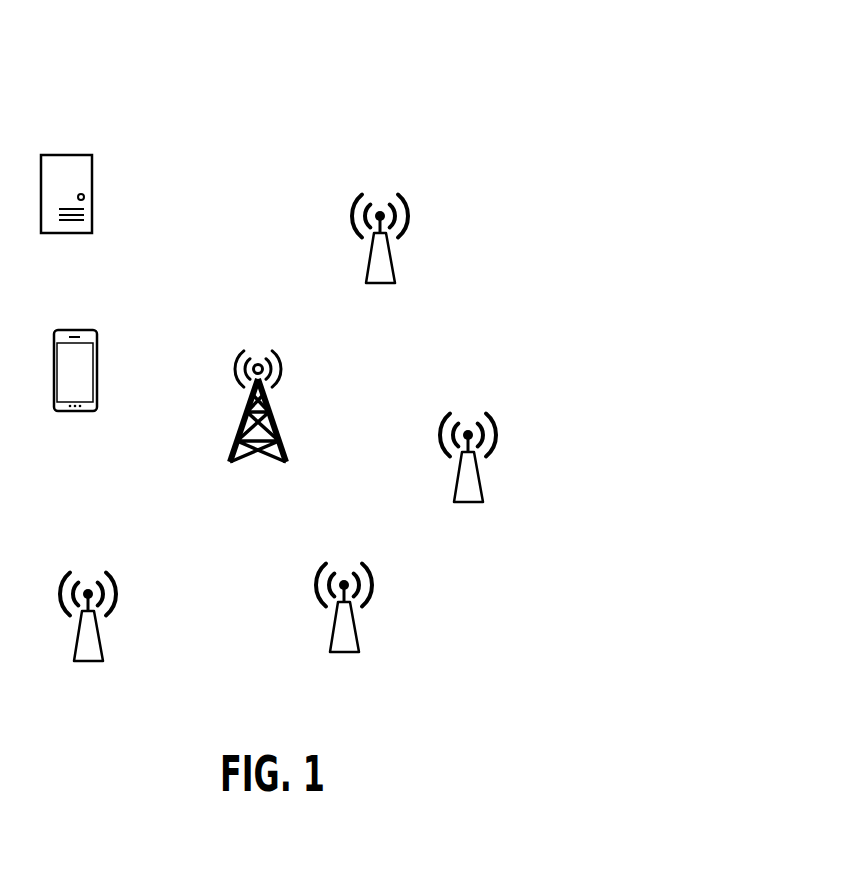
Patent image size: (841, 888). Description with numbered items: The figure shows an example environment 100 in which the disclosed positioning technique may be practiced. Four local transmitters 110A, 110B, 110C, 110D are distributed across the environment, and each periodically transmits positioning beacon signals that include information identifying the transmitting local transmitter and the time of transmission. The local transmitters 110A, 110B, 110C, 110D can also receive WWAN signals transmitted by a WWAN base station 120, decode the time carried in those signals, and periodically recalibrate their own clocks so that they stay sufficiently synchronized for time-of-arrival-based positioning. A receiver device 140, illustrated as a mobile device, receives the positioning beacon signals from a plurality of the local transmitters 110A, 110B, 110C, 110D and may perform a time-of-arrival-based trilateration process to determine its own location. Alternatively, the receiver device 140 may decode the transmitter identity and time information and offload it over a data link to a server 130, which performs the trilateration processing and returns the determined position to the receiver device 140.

The example environment 100 is at (442, 45).
The local transmitter 110A is at (383, 267).
The local transmitter 110B is at (471, 486).
The local transmitter 110C is at (347, 636).
The local transmitter 110D is at (91, 645).
The WWAN base station 120 is at (272, 432).
The server 130 is at (87, 183).
The receiver device 140 is at (78, 390).